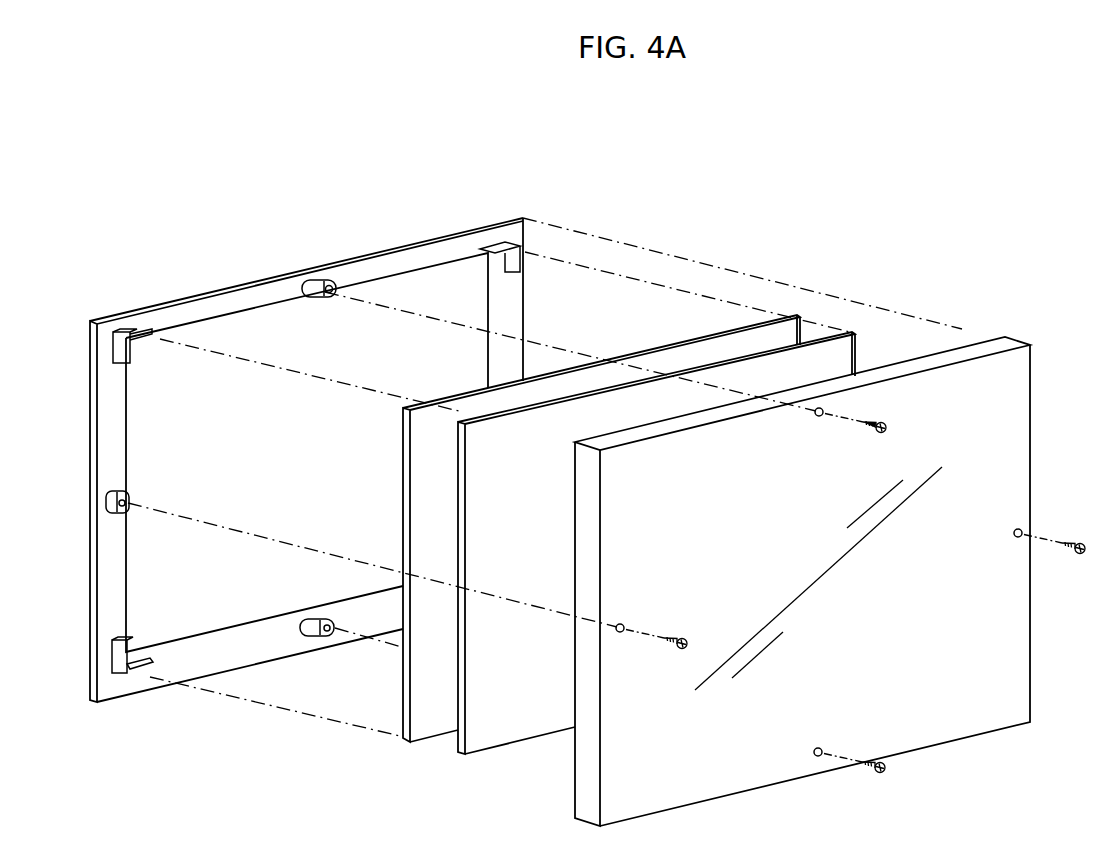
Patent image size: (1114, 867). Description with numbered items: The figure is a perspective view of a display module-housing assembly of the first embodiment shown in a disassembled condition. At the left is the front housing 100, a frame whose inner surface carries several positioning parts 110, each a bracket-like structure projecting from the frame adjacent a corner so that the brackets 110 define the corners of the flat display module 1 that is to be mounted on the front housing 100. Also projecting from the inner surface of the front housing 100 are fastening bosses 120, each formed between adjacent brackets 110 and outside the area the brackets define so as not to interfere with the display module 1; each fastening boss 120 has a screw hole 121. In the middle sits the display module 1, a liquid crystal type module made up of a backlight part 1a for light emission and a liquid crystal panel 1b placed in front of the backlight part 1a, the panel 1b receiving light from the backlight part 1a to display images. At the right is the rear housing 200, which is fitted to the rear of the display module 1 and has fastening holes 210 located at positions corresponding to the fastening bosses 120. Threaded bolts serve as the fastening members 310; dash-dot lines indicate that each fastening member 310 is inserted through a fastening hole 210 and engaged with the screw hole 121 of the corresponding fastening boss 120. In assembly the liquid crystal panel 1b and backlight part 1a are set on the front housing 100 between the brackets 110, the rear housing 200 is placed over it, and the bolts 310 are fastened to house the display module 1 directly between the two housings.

The front housing 100 is at (409, 246).
The positioning part 110 is at (502, 248).
The fastening boss 120 is at (312, 283).
The screw hole 121 is at (333, 284).
The flat display module 1 is at (647, 488).
The backlight part 1a is at (846, 335).
The liquid crystal panel 1b is at (793, 316).
The rear housing 200 is at (1029, 345).
The fastening hole 210 is at (818, 417).
The fastening member 310 is at (888, 427).